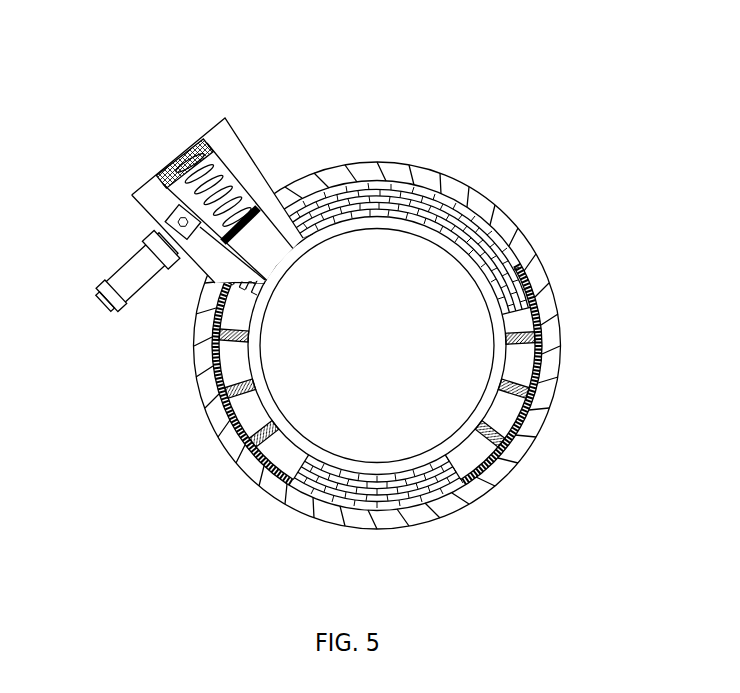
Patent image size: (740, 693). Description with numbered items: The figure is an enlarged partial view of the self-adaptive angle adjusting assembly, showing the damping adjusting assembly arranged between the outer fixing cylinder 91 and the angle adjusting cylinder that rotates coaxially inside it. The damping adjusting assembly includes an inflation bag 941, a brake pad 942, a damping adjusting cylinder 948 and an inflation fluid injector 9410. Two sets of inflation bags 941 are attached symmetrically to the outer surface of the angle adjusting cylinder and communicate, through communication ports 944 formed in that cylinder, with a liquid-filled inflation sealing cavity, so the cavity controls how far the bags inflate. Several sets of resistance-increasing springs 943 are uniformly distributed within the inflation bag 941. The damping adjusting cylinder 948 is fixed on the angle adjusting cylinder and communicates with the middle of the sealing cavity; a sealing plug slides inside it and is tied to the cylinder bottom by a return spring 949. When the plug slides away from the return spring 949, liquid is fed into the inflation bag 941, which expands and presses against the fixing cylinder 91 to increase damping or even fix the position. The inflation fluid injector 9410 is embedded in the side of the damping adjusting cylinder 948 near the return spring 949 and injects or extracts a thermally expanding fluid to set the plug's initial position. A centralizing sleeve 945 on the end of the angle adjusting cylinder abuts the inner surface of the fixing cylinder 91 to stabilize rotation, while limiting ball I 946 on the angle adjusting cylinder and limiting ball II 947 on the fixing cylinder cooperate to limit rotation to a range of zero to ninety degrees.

The fixing cylinder 91 is at (443, 185).
The inflation bag 941 is at (202, 377).
The brake pad 942 is at (215, 435).
The resistance-increasing spring 943 is at (543, 315).
The communication port 944 is at (497, 405).
The centralizing sleeve 945 is at (380, 515).
The limiting ball I 946 is at (294, 185).
The limiting ball II 947 is at (525, 262).
The damping adjusting cylinder 948 is at (188, 135).
The return spring 949 is at (230, 168).
The inflation fluid injector 9410 is at (142, 258).